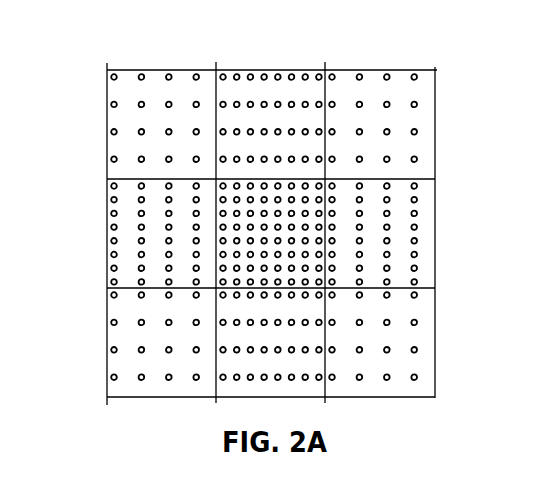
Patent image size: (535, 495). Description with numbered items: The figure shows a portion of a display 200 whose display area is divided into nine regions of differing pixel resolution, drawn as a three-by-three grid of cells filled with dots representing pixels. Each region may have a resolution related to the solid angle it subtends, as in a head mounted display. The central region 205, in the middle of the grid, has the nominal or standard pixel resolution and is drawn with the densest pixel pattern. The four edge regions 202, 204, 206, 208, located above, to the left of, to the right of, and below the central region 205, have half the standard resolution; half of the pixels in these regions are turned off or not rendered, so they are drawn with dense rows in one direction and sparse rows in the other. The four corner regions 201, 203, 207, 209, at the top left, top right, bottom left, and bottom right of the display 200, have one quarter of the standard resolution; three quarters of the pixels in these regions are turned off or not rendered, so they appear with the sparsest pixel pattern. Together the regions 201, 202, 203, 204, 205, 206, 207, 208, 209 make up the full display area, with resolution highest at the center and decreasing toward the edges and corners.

The pixel array 200 is at (119, 58).
The corner region 201 is at (110, 90).
The edge region 202 is at (262, 74).
The corner region 203 is at (438, 77).
The edge region 204 is at (110, 232).
The central region 205 is at (318, 207).
The edge region 206 is at (430, 242).
The corner region 207 is at (110, 360).
The edge region 208 is at (228, 392).
The corner region 209 is at (394, 392).